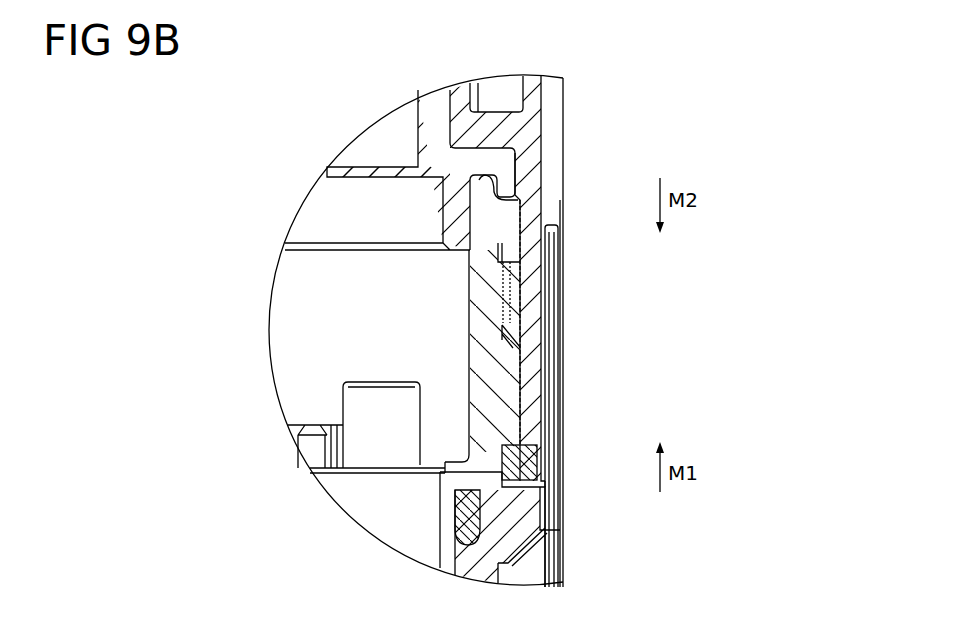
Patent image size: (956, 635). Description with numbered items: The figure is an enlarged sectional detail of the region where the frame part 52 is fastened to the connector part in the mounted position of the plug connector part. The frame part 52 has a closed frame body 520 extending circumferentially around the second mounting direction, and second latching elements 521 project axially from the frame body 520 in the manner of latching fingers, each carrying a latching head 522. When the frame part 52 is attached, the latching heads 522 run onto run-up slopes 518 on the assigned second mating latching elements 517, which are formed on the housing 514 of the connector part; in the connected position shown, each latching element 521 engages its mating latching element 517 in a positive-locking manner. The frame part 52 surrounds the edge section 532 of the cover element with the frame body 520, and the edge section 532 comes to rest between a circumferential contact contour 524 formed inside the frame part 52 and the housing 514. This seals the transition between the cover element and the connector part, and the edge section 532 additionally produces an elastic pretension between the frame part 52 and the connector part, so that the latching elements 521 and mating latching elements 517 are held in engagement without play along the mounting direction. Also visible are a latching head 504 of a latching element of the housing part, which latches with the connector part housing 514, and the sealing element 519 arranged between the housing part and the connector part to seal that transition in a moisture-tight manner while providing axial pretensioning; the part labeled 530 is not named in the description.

The frame part 52 is at (544, 81).
The latching head 504 is at (527, 553).
The housing 514 is at (492, 282).
The second mating latching element 517 is at (513, 410).
The run-up slope 518 is at (517, 347).
The sealing element 519 is at (463, 530).
The frame body 520 is at (527, 128).
The second latching element 521 is at (528, 375).
The latching head 522 is at (522, 458).
The circumferential contact contour 524 is at (470, 160).
The upper housing 530 is at (432, 113).
The edge section 532 is at (507, 173).